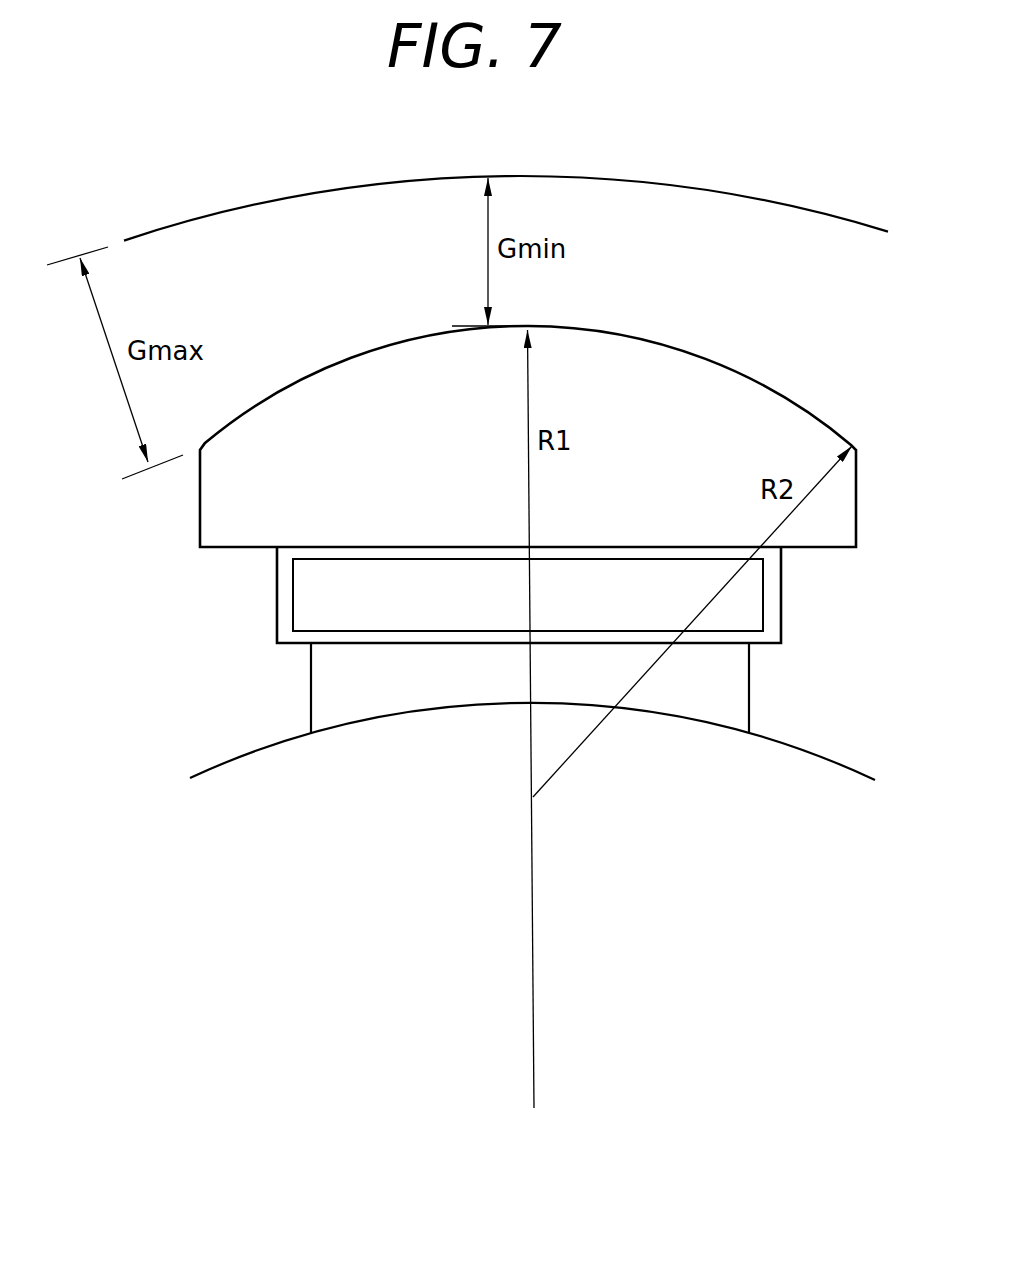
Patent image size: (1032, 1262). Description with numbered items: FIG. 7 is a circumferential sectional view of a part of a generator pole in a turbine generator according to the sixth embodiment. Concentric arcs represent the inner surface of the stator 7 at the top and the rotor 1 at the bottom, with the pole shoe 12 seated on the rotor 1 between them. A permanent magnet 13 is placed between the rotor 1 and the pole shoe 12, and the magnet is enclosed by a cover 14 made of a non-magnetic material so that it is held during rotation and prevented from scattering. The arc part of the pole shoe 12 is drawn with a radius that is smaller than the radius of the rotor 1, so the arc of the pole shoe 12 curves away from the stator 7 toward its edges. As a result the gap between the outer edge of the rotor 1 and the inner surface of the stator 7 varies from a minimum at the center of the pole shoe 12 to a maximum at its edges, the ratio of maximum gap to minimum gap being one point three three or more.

The stator 7 is at (712, 178).
The pole shoe 12 is at (710, 382).
The permanent magnet 13 is at (318, 590).
The cover 14 is at (780, 596).
The rotor 1 is at (808, 774).